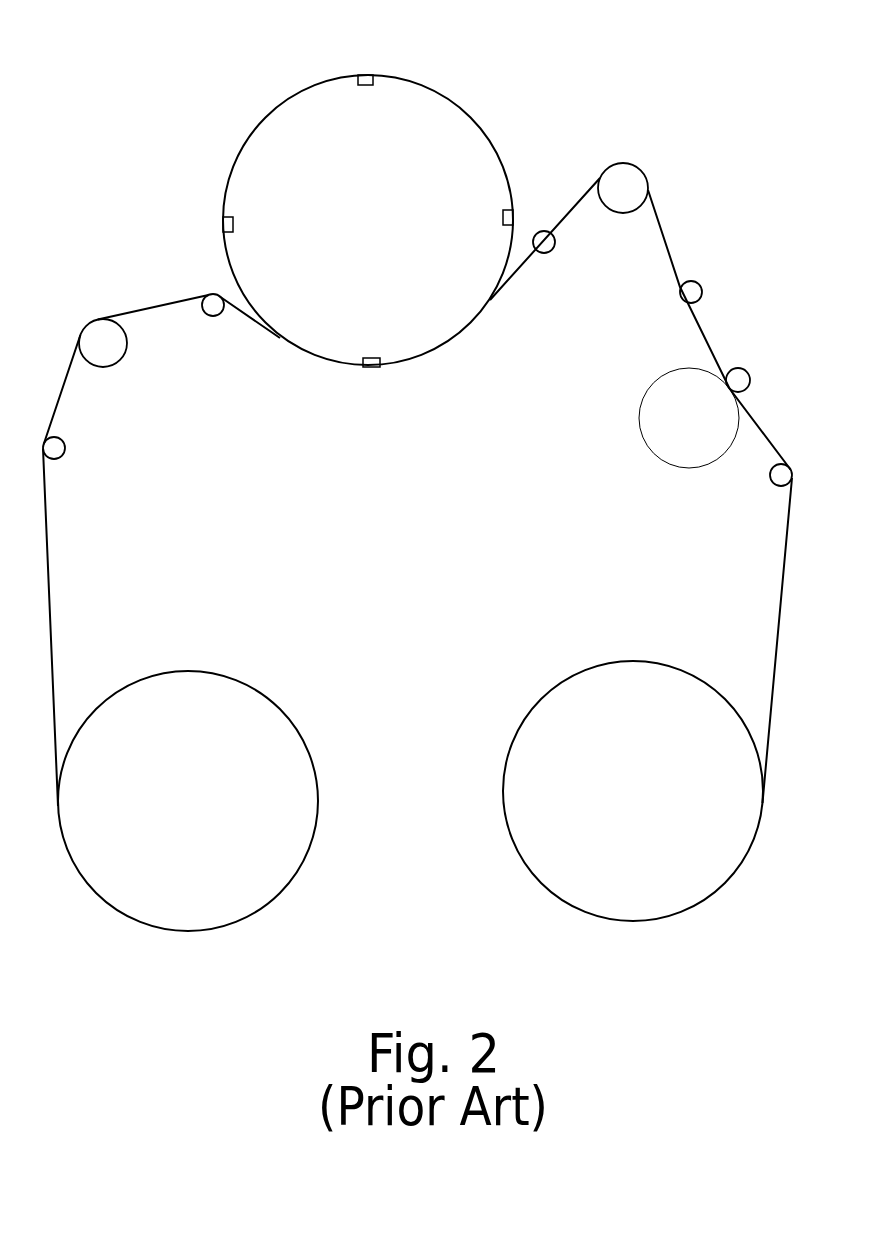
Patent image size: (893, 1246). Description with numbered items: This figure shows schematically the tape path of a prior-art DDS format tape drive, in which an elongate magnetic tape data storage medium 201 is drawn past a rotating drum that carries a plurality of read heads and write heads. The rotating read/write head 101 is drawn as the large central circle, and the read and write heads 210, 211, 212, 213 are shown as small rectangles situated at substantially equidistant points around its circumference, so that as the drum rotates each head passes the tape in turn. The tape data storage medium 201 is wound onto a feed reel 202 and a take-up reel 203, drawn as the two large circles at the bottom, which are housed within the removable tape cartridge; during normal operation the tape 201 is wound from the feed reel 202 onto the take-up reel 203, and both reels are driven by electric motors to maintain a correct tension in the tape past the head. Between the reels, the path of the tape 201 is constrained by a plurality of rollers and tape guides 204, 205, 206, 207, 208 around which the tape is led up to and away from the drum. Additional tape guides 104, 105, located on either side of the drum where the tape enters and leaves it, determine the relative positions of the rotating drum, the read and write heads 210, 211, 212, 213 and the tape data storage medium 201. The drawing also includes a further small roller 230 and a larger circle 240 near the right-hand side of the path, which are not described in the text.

The rotating read/write head 101 is at (452, 116).
The tape guide 104 is at (217, 316).
The tape guide 105 is at (546, 254).
The magnetic tape data storage medium 201 is at (47, 572).
The feed reel 202 is at (318, 790).
The take-up reel 203 is at (503, 791).
The roller 204 is at (64, 450).
The roller 205 is at (99, 319).
The roller 206 is at (626, 164).
The roller 207 is at (702, 291).
The roller 208 is at (770, 474).
The read/write head 210 is at (364, 75).
The read/write head 211 is at (532, 216).
The read/write head 212 is at (372, 358).
The read/write head 213 is at (222, 224).
The roller 230 is at (751, 378).
The roller 240 is at (641, 418).